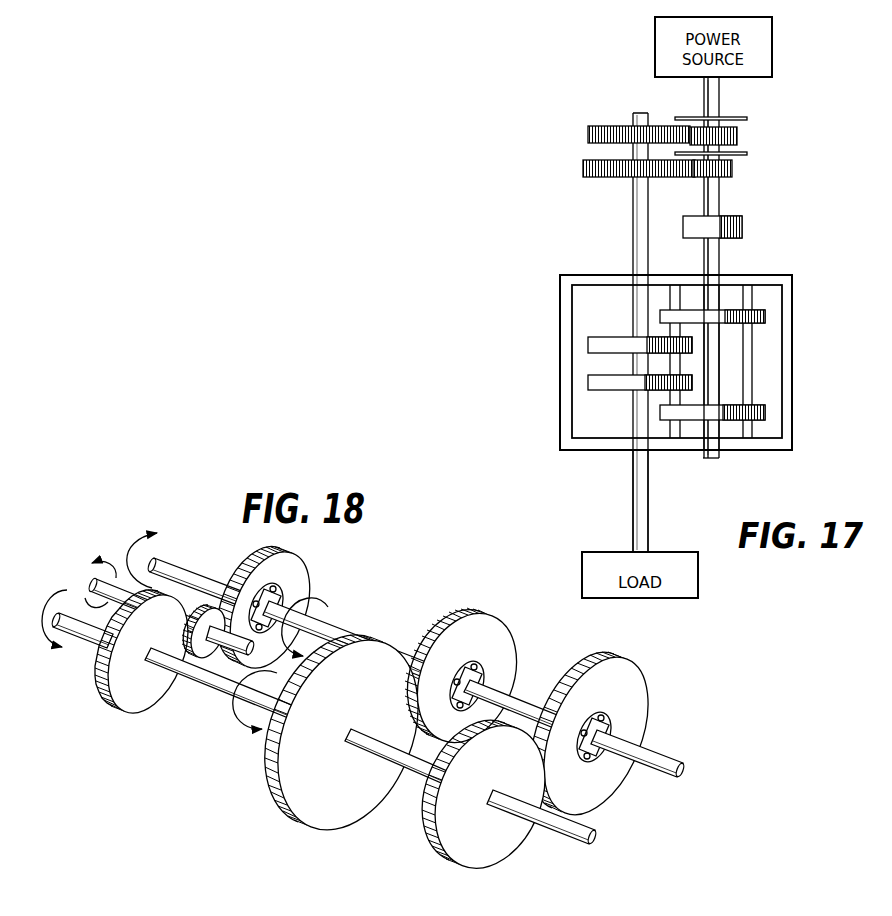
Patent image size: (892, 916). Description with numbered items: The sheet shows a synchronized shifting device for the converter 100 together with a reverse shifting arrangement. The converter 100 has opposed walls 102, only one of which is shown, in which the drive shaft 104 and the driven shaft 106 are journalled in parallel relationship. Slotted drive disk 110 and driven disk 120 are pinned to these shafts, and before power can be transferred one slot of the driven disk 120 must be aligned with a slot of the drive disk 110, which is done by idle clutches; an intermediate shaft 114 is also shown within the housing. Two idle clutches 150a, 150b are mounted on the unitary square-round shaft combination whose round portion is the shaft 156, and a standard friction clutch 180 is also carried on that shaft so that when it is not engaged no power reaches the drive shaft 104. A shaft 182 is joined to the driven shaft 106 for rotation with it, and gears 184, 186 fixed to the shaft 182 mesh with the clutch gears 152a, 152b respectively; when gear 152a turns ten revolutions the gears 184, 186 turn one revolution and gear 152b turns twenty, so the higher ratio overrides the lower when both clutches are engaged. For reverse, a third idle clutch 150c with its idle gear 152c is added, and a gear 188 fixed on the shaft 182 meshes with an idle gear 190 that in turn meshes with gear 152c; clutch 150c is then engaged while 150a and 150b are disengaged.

In FIG. 17, the converter 100 is at (596, 497).
In FIG. 17, the opposed walls 102 is at (792, 278).
In FIG. 17, the drive shaft 104 is at (718, 380).
In FIG. 17, the driven shaft 106 is at (632, 300).
In FIG. 17, the drive disk 110 is at (765, 413).
In FIG. 17, the intermediate shaft 114 is at (752, 348).
In FIG. 17, the driven disk 120 is at (590, 383).
In FIG. 17, the idle clutch 150a is at (746, 131).
In FIG. 18, the idle clutch 150a is at (656, 730).
In FIG. 17, the idle clutch 150b is at (742, 178).
In FIG. 18, the idle clutch 150b is at (505, 624).
In FIG. 18, the third idle clutch 150c is at (297, 554).
In FIG. 17, the gear 152a is at (732, 169).
In FIG. 18, the gear 152a is at (628, 686).
In FIG. 17, the gear 152b is at (737, 136).
In FIG. 18, the gear 152b is at (453, 640).
In FIG. 18, the idle gear 152c is at (305, 583).
In FIG. 17, the round shaft 156 is at (720, 101).
In FIG. 17, the friction clutch 180 is at (742, 228).
In FIG. 17, the shaft 182 is at (633, 228).
In FIG. 18, the shaft 182 is at (214, 693).
In FIG. 17, the gear 184 is at (605, 178).
In FIG. 18, the gear 184 is at (493, 847).
In FIG. 17, the gear 186 is at (618, 126).
In FIG. 18, the gear 186 is at (352, 812).
In FIG. 18, the gear 188 is at (140, 698).
In FIG. 18, the idle gear 190 is at (200, 611).